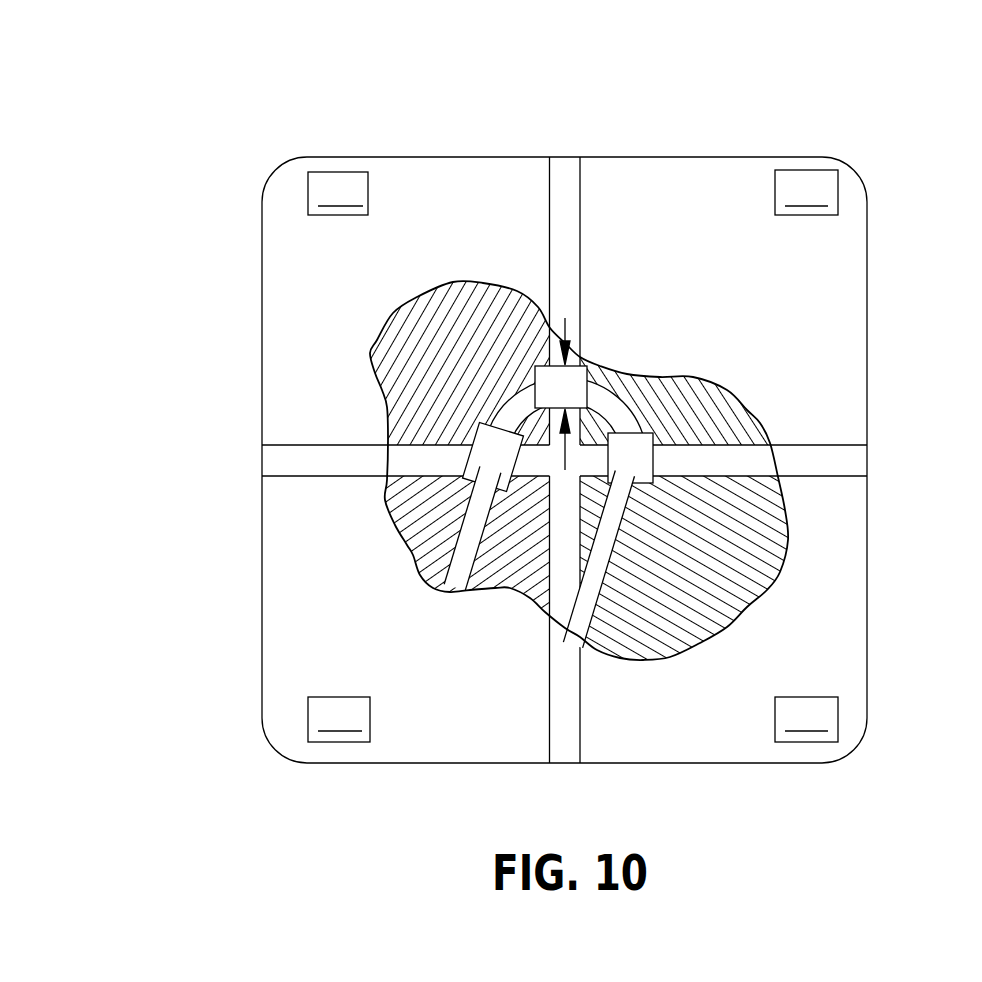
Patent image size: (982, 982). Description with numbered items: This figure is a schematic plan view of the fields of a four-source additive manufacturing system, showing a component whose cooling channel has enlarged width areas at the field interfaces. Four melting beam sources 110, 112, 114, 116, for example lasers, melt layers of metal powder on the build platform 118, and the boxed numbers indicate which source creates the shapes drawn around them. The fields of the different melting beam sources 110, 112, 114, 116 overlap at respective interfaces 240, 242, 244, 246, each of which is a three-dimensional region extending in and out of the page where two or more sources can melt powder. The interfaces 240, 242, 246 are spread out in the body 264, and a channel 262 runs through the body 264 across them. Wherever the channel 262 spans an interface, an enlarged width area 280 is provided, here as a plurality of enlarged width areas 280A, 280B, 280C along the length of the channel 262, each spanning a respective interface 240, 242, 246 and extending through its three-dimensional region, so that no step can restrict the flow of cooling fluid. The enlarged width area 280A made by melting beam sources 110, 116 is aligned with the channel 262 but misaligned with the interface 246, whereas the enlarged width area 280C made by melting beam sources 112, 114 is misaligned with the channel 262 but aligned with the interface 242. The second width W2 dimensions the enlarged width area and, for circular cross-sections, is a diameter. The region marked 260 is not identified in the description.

The melting beam source 110 is at (338, 193).
The melting beam source 112 is at (806, 192).
The melting beam source 114 is at (806, 719).
The melting beam source 116 is at (339, 719).
The build platform 118 is at (790, 157).
The interface 240 is at (564, 146).
The interface 242 is at (882, 457).
The interface 244 is at (565, 767).
The interface 246 is at (257, 459).
The upper doped region 260 is at (727, 423).
The channel 262 is at (458, 556).
The body 264 is at (763, 523).
The enlarged width area 280 is at (576, 350).
The enlarged width area 280A is at (462, 413).
The enlarged width area 280B is at (525, 341).
The enlarged width area 280C is at (668, 415).
The second width W2 is at (567, 332).